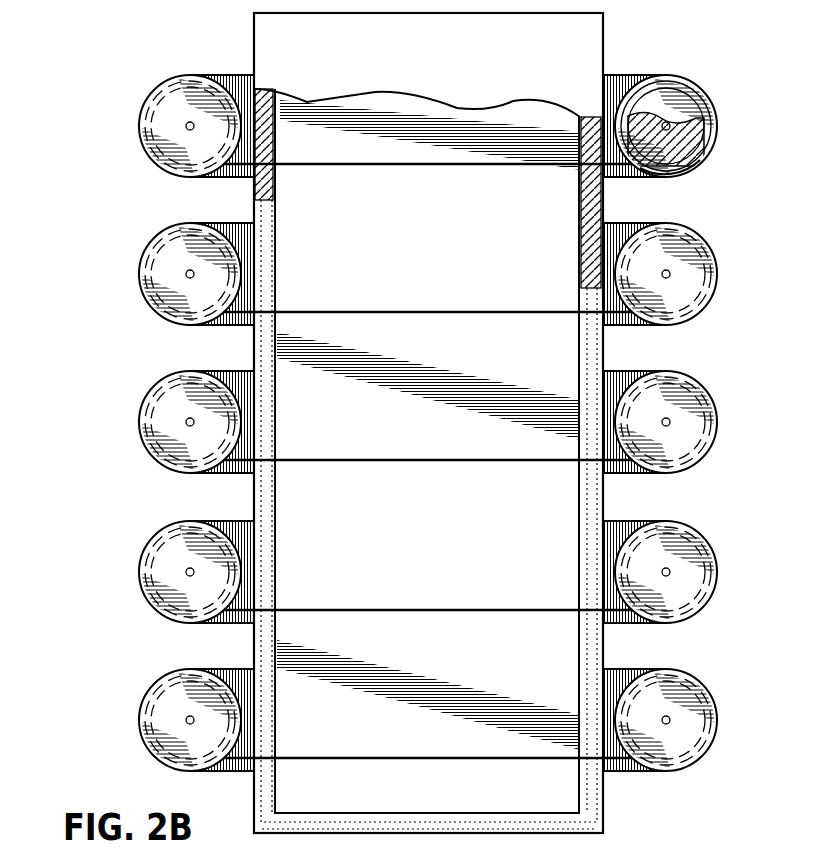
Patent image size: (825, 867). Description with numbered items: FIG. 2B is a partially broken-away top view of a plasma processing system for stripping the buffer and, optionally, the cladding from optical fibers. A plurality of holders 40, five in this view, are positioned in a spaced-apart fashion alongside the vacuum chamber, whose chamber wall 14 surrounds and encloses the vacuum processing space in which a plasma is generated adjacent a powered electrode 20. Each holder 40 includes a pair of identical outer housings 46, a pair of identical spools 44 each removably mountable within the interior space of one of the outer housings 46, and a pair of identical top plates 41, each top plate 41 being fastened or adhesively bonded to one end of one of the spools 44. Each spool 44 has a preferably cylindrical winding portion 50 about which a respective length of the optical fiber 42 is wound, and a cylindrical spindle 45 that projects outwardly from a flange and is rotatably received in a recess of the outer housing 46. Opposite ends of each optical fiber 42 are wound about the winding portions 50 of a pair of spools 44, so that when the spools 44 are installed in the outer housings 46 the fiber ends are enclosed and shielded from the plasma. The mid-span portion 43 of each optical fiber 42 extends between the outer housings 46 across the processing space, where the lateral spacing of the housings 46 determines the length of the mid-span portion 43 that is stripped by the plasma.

The chamber wall 14 is at (443, 70).
The powered electrode 20 is at (396, 259).
The holder 40 is at (130, 90).
The top plate 41 is at (692, 92).
The optical fiber 42 is at (696, 163).
The mid-span portion 43 is at (457, 166).
The spool 44 is at (698, 114).
The cylindrical spindle 45 is at (190, 122).
The outer housing 46 is at (678, 174).
The winding portion 50 is at (706, 142).